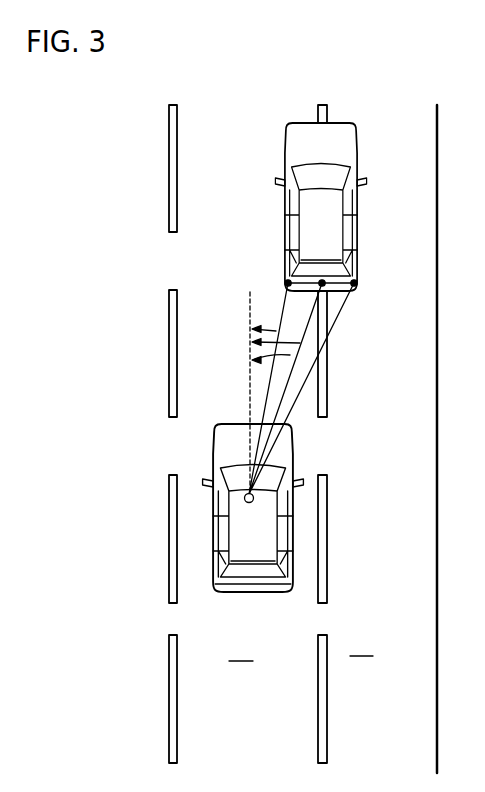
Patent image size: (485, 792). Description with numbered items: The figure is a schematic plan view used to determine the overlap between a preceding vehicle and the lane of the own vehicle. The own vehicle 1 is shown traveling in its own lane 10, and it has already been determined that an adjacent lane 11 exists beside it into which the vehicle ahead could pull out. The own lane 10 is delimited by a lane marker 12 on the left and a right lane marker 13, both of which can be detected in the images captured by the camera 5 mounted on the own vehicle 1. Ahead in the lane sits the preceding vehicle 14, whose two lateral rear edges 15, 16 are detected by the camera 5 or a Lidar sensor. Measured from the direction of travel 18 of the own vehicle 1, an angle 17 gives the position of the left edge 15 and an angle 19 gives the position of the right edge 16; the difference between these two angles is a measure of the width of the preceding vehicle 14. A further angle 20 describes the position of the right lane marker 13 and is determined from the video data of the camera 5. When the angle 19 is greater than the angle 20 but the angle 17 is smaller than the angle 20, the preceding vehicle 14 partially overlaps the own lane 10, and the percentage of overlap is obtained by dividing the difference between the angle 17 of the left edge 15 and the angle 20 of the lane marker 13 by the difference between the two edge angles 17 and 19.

The own vehicle 1 is at (213, 564).
The camera 5 is at (213, 498).
The own lane 10 is at (240, 648).
The adjacent lane 11 is at (362, 644).
The lane marker 12 is at (171, 172).
The right lane marker 13 is at (327, 523).
The preceding vehicle 14 is at (285, 190).
The left lateral rear edge 15 is at (288, 283).
The right lateral rear edge 16 is at (354, 284).
The angle 17 is at (270, 330).
The direction of travel 18 is at (249, 384).
The angle 19 is at (290, 355).
The angle 20 is at (300, 343).